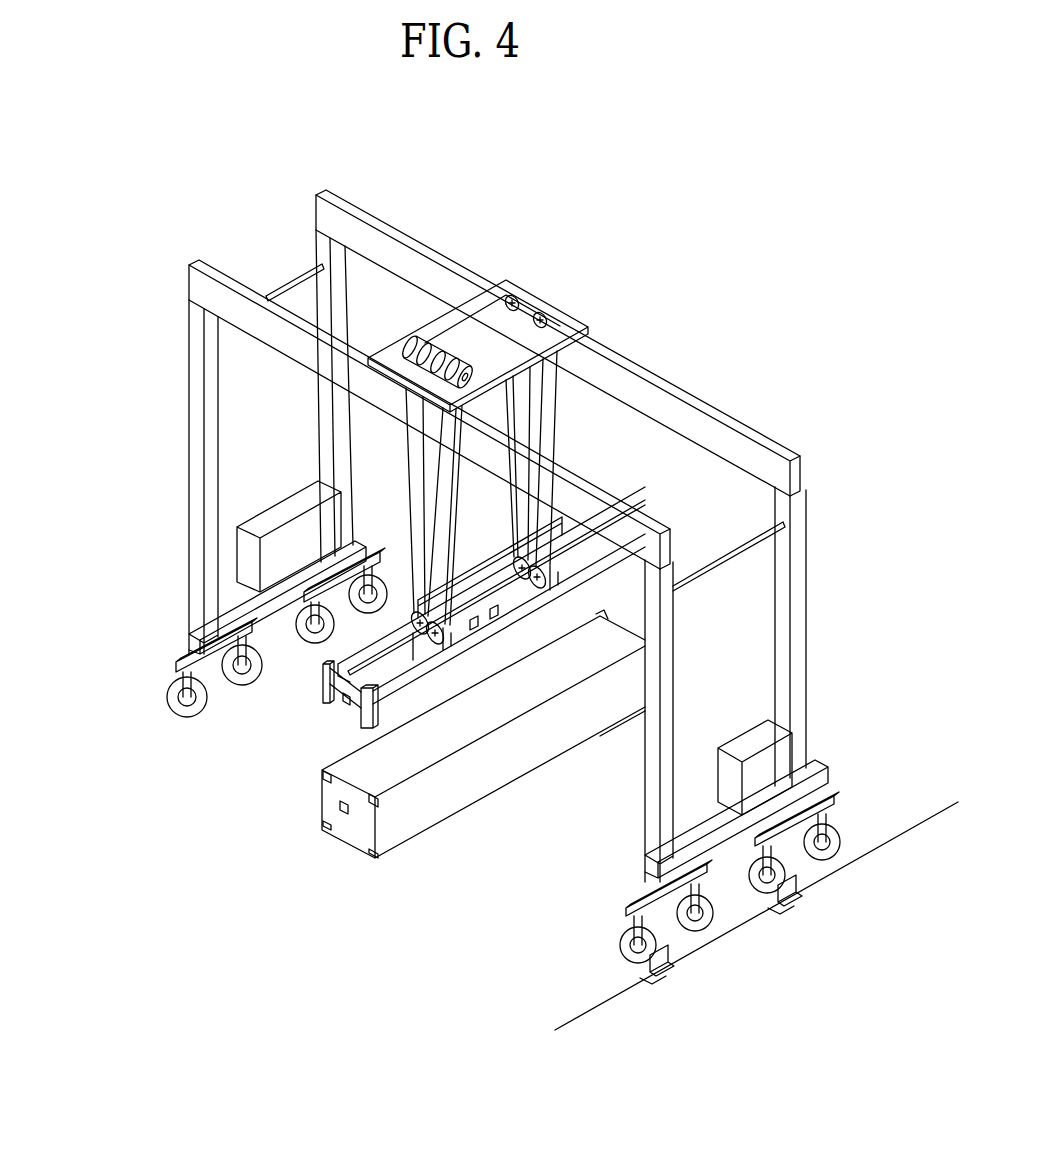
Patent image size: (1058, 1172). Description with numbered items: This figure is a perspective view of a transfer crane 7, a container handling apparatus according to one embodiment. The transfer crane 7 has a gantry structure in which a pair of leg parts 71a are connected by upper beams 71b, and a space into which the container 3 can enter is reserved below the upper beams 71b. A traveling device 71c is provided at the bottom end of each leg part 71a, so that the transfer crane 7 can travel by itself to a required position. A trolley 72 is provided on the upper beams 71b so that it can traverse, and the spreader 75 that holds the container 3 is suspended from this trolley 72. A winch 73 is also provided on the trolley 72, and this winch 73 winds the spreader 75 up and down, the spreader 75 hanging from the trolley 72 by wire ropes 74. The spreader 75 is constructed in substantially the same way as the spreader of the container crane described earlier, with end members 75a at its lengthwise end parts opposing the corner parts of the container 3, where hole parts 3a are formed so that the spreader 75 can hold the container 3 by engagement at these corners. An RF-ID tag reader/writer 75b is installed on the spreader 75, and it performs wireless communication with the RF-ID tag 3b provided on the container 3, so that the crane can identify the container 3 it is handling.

The transfer crane 7 is at (638, 340).
The leg parts 71a is at (189, 428).
The upper beams 71b is at (717, 433).
The traveling device 71c is at (167, 641).
The trolley 72 is at (537, 303).
The winch 73 is at (407, 338).
The wire rope 74 is at (560, 430).
The spreader 75 is at (308, 710).
The spreader end member 75a is at (353, 726).
The RF-ID tag reader/writer 75b is at (326, 692).
The container 3 is at (497, 797).
The hole parts 3a is at (382, 798).
The RF-ID tag 3b is at (343, 808).